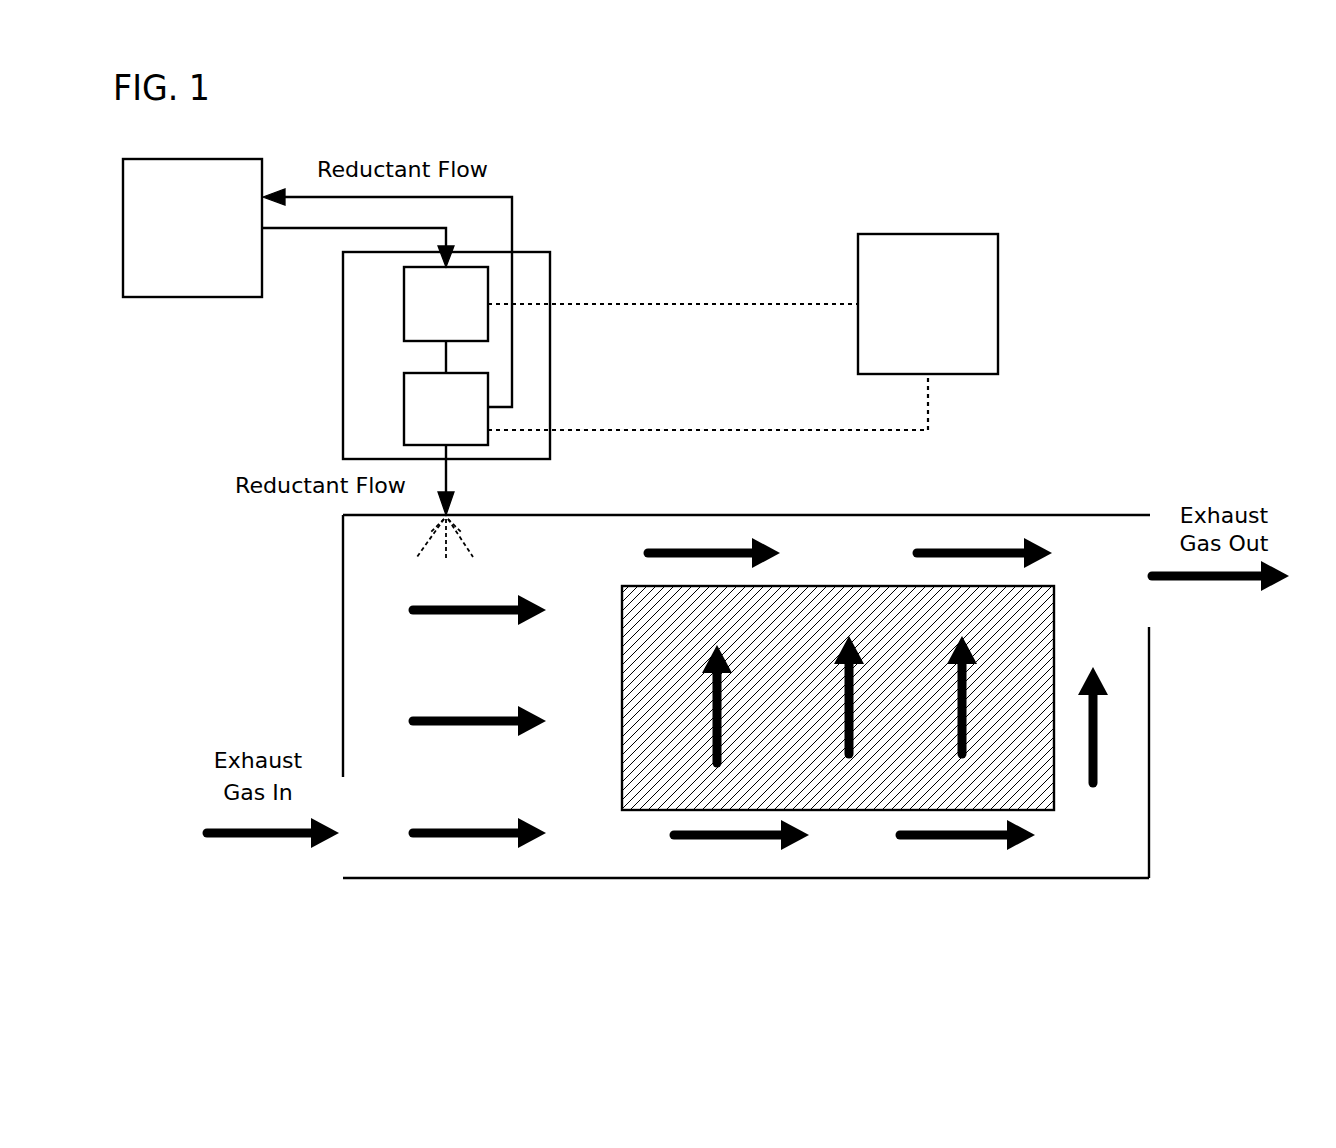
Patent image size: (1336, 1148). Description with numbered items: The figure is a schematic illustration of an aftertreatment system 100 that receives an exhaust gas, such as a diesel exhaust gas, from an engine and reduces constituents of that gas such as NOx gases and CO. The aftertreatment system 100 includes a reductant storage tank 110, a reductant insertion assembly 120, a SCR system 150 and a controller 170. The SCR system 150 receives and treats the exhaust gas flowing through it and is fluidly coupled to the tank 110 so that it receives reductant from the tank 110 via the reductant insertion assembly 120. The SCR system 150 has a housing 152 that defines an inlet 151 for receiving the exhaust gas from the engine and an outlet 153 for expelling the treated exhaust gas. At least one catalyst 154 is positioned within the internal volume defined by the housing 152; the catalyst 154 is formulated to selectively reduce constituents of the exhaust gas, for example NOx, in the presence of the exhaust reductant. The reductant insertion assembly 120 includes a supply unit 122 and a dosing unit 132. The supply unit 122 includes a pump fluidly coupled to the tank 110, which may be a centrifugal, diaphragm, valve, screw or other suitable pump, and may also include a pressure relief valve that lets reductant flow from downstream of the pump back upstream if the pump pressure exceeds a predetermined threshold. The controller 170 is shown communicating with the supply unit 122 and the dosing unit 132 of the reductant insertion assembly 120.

The aftertreatment system 100 is at (1056, 168).
The reductant storage tank 110 is at (193, 280).
The reductant insertion assembly 120 is at (550, 232).
The supply unit 122 is at (404, 304).
The dosing unit 132 is at (404, 407).
The SCR system 150 is at (746, 685).
The inlet 151 is at (343, 861).
The housing 152 is at (343, 537).
The outlet 153 is at (1139, 609).
The catalyst 154 is at (850, 793).
The controller 170 is at (910, 331).